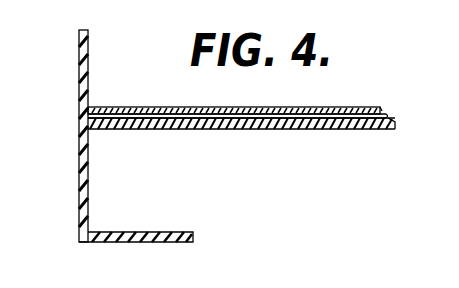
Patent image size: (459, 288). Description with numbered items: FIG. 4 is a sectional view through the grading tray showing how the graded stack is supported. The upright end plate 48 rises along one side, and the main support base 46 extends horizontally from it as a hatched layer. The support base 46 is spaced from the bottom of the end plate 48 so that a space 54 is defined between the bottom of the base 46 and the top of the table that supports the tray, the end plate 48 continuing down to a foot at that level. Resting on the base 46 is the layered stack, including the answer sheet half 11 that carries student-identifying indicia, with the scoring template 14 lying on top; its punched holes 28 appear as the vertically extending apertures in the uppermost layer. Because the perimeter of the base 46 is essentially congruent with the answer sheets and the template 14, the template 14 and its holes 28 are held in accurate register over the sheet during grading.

The end plate 48 is at (79, 159).
The space 54 is at (135, 233).
The punched holes 28 is at (236, 107).
The one-half of answer sheet 11 is at (307, 107).
The scoring template 14 is at (347, 107).
The main support base 46 is at (276, 129).